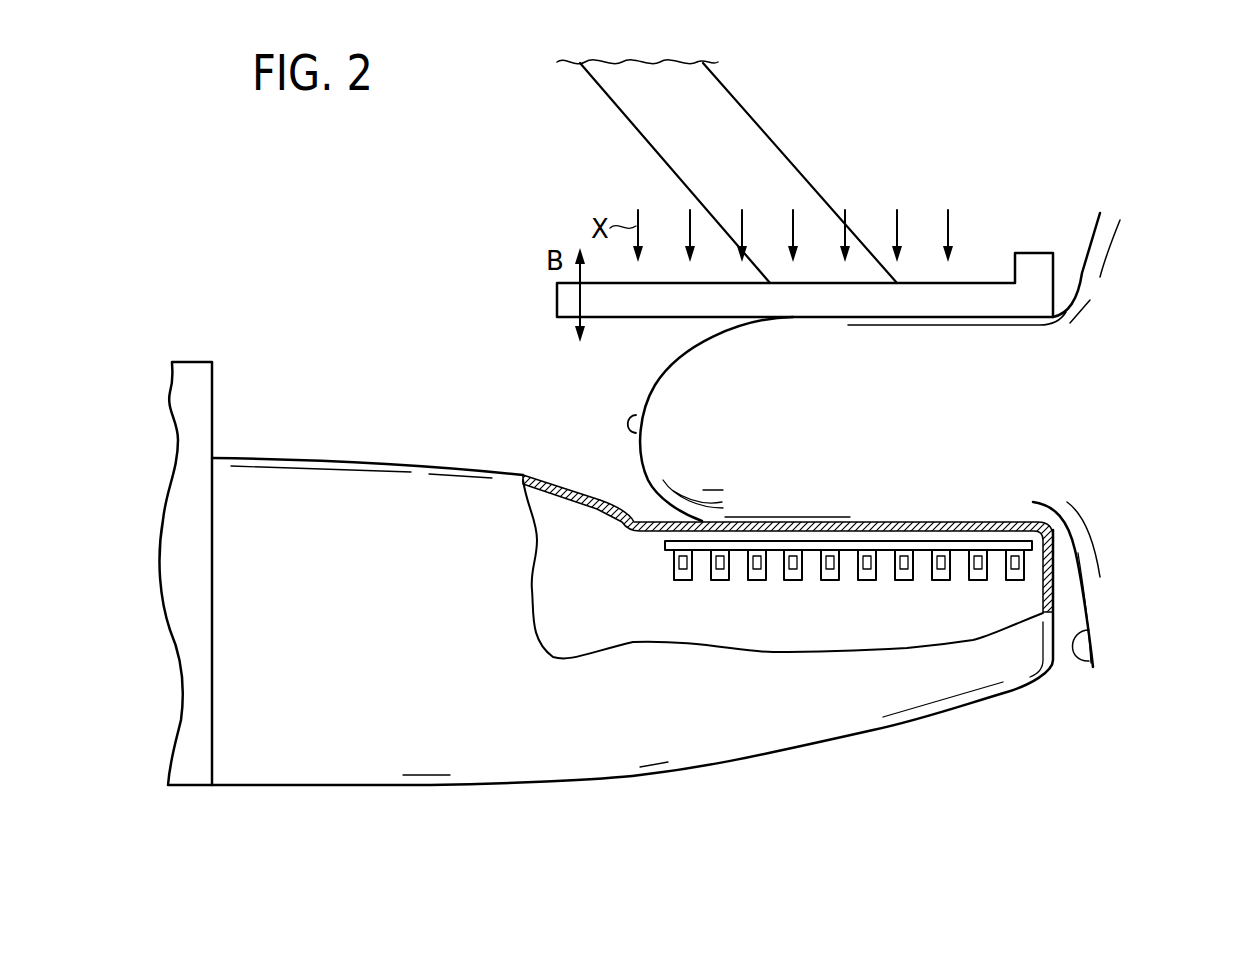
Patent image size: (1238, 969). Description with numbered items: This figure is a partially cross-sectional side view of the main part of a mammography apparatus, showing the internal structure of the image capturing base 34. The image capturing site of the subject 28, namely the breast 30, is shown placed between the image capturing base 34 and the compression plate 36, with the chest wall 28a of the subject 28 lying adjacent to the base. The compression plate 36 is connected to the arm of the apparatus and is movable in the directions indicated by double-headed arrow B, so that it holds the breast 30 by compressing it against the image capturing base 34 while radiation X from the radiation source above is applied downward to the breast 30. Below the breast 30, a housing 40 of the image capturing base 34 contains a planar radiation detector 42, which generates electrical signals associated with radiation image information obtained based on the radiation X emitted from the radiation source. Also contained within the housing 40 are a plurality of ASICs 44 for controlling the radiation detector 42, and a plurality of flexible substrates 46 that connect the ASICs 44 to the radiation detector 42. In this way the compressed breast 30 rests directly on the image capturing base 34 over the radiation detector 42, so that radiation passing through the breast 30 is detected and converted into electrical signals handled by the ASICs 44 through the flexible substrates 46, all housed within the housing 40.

The subject 28 is at (1103, 603).
The chest wall 28a is at (1097, 663).
The breast 30 is at (652, 396).
The image capturing base 34 is at (912, 723).
The compression plate 36 is at (1033, 265).
The housing 40 is at (738, 728).
The radiation detector 42 is at (863, 541).
The ASICs 44 is at (720, 580).
The flexible substrates 46 is at (674, 567).